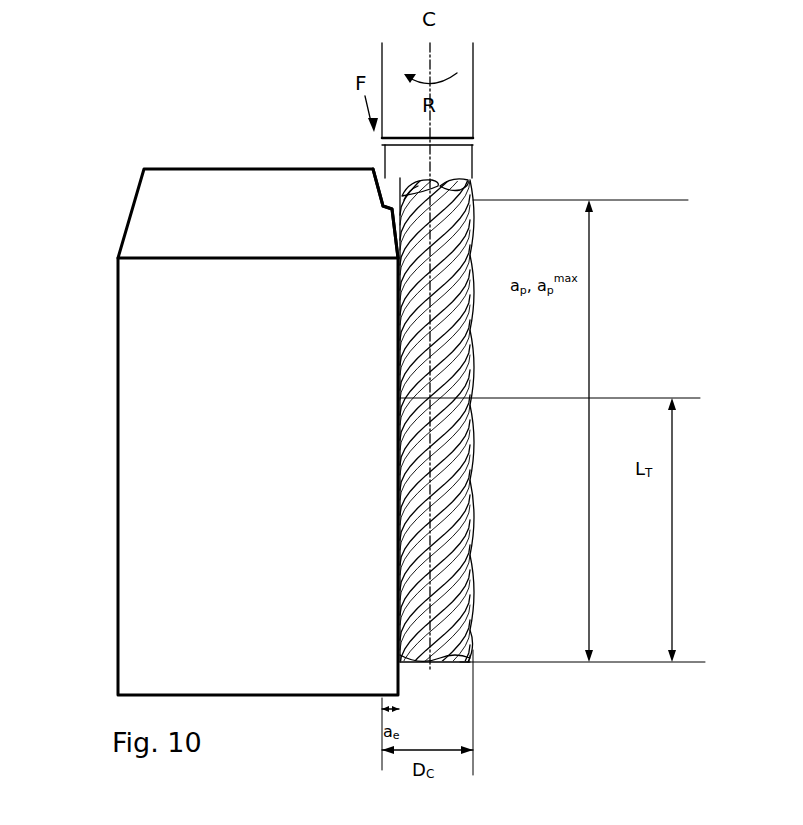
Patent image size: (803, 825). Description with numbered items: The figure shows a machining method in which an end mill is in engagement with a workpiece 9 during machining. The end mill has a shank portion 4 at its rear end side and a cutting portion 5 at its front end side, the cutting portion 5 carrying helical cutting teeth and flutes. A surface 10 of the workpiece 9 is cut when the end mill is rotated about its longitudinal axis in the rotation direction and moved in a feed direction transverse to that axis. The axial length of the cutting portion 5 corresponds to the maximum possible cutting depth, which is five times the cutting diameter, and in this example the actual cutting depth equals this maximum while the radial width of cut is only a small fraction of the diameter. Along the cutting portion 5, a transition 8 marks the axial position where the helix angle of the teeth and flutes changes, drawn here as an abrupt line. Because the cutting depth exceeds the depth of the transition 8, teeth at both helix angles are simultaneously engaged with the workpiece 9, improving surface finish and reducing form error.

The shank portion 4 is at (478, 62).
The cutting portion 5 is at (480, 240).
The transition 8 is at (470, 398).
The workpiece 9 is at (108, 516).
The surface 10 is at (381, 170).